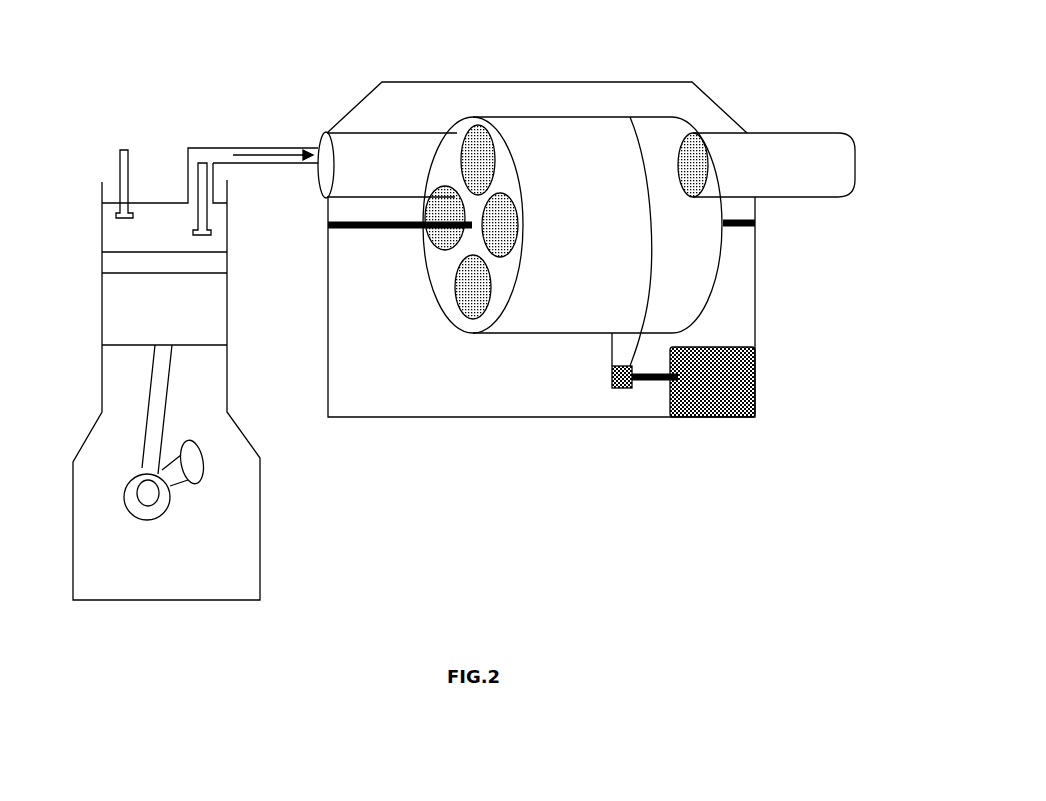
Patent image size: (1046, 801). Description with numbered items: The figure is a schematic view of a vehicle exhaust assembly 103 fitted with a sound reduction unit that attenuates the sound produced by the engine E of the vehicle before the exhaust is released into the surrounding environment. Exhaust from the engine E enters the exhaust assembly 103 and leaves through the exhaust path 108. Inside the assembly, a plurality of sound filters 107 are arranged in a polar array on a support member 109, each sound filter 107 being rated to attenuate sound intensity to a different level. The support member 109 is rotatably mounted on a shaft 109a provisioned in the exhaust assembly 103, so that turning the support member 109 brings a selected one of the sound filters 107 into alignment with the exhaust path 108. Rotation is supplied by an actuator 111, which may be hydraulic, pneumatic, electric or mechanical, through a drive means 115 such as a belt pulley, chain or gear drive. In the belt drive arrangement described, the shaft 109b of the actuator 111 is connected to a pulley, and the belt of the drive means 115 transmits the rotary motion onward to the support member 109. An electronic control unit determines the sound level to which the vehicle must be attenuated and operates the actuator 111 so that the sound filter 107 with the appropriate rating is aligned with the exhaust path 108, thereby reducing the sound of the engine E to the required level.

The engine E is at (102, 200).
The exhaust assembly 103 is at (707, 90).
The sound filters 107 is at (425, 233).
The exhaust path 108 is at (800, 138).
The support member 109 is at (530, 310).
The shaft 109a is at (755, 228).
The shaft of the actuator 109b is at (663, 380).
The actuator 111 is at (743, 387).
The drive means 115 is at (637, 347).